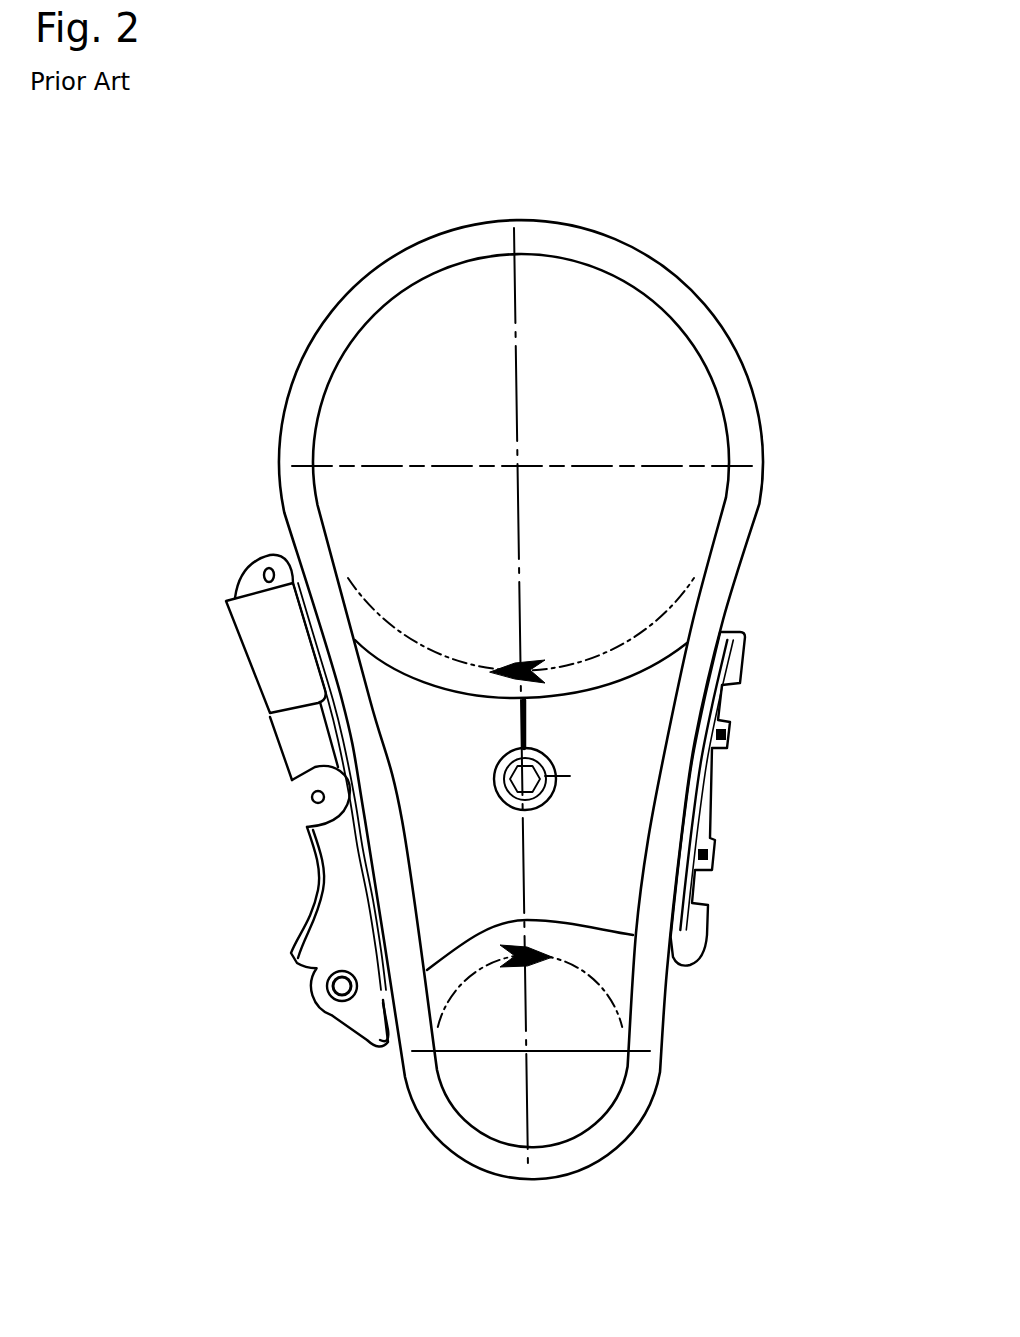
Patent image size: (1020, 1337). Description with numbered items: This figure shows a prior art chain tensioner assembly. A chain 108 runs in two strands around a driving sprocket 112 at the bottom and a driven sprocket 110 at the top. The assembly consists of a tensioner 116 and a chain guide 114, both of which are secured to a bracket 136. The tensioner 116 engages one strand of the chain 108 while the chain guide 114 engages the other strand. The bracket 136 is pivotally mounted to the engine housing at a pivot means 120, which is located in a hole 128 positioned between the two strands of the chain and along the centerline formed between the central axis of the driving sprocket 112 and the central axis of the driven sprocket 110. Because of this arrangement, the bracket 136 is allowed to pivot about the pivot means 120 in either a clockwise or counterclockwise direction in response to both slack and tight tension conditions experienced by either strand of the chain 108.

The chain 108 is at (720, 365).
The driven sprocket 110 is at (548, 303).
The driving sprocket 112 is at (580, 1076).
The chain guide 114 is at (712, 808).
The tensioner 116 is at (298, 908).
The pivot means 120 is at (545, 781).
The hole 128 is at (503, 794).
The bracket 136 is at (410, 760).